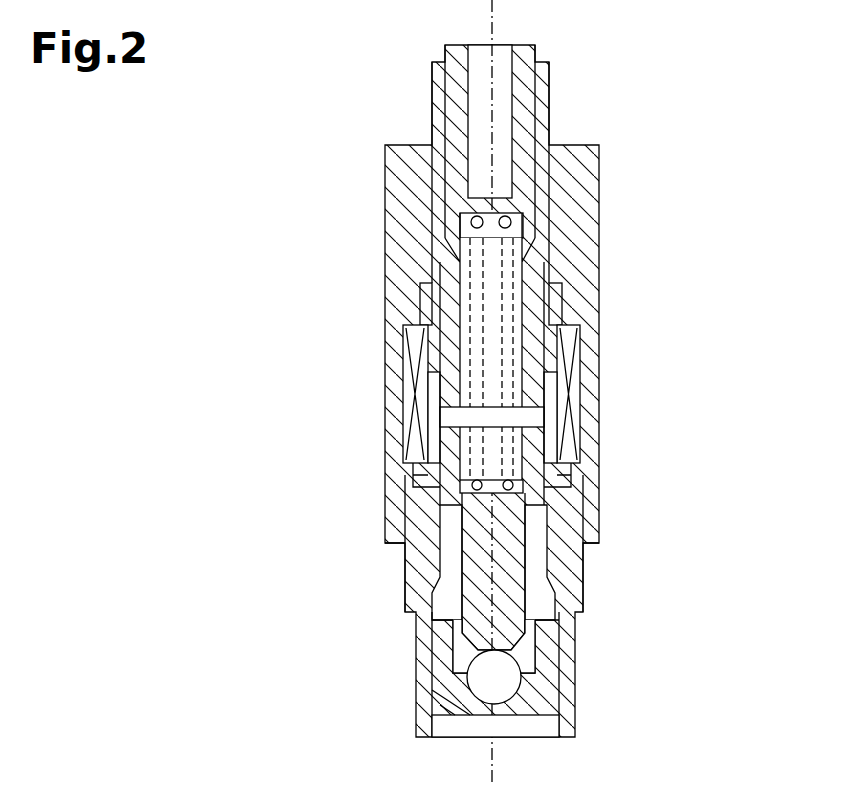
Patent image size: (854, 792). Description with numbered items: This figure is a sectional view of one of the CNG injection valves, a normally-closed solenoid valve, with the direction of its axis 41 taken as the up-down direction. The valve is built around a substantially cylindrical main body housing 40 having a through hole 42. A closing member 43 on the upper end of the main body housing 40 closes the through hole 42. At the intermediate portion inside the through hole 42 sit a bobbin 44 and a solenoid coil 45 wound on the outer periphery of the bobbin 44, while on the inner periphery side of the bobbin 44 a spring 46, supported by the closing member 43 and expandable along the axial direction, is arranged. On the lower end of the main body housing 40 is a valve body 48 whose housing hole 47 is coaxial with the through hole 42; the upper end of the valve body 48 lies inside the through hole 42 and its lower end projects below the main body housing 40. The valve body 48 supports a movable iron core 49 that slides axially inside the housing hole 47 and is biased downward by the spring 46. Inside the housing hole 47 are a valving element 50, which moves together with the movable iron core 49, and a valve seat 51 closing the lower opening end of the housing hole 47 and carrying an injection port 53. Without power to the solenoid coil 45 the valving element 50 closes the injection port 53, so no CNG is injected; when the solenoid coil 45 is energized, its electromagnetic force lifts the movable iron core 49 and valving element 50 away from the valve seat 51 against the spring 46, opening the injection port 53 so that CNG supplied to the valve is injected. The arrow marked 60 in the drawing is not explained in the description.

The main body housing 40 is at (599, 197).
The axis 41 is at (492, 17).
The through hole 42 is at (545, 258).
The closing member 43 is at (523, 90).
The bobbin 44 is at (422, 297).
The solenoid coil 45 is at (412, 343).
The spring 46 is at (552, 312).
The housing hole 47 is at (548, 515).
The valve body 48 is at (580, 577).
The movable iron core 49 is at (548, 465).
The valving element 50 is at (512, 665).
The valve seat 51 is at (440, 650).
The injection port 53 is at (492, 705).
The fluid flow direction 60 is at (400, 378).